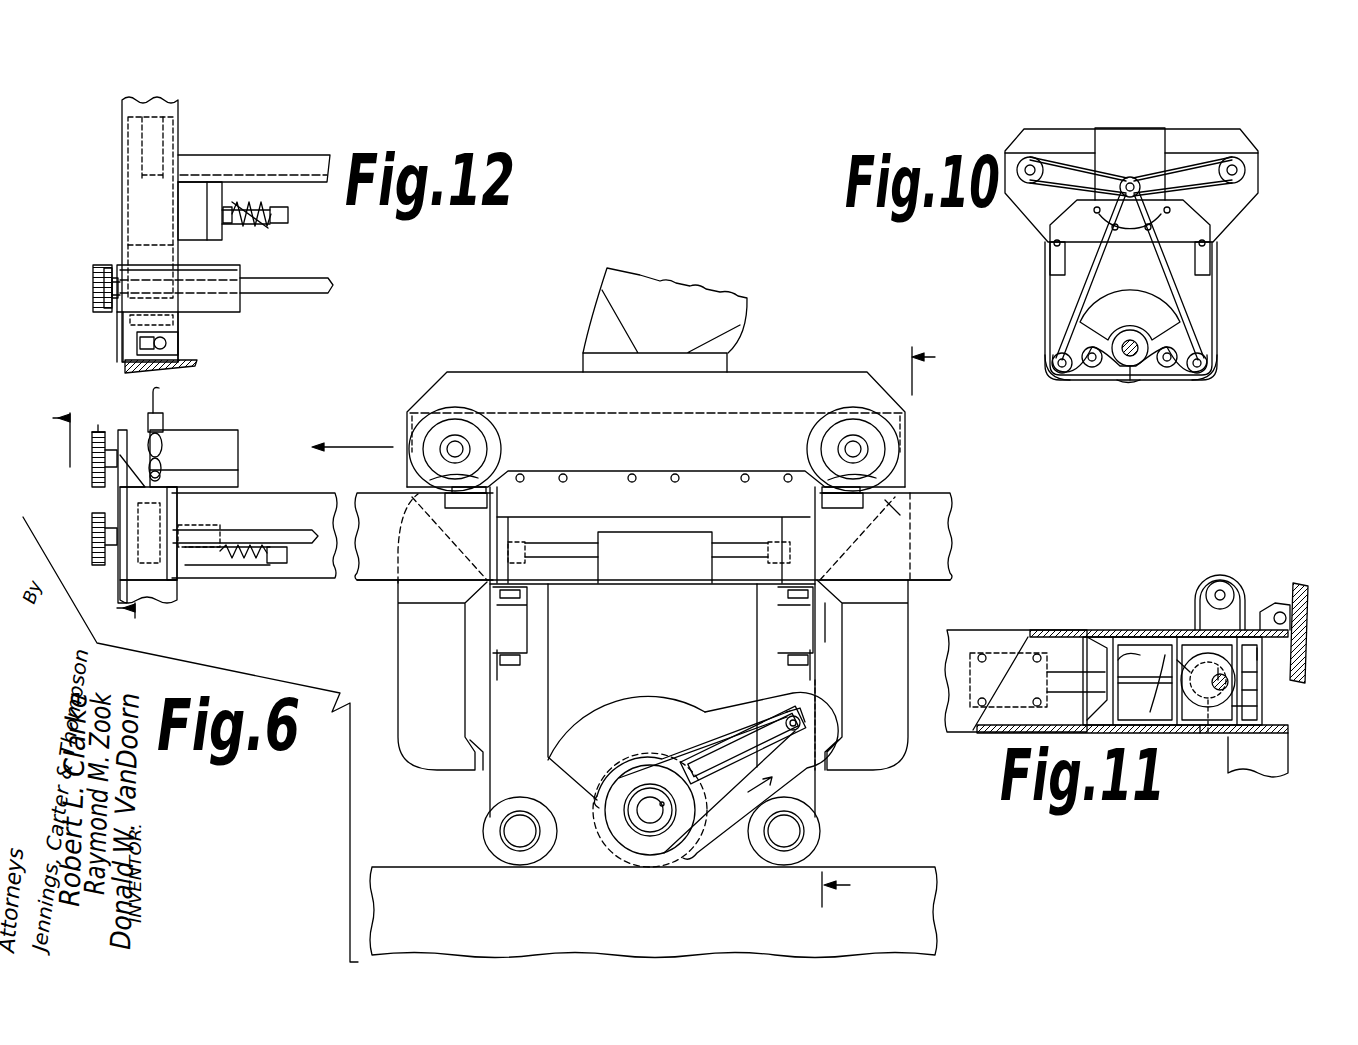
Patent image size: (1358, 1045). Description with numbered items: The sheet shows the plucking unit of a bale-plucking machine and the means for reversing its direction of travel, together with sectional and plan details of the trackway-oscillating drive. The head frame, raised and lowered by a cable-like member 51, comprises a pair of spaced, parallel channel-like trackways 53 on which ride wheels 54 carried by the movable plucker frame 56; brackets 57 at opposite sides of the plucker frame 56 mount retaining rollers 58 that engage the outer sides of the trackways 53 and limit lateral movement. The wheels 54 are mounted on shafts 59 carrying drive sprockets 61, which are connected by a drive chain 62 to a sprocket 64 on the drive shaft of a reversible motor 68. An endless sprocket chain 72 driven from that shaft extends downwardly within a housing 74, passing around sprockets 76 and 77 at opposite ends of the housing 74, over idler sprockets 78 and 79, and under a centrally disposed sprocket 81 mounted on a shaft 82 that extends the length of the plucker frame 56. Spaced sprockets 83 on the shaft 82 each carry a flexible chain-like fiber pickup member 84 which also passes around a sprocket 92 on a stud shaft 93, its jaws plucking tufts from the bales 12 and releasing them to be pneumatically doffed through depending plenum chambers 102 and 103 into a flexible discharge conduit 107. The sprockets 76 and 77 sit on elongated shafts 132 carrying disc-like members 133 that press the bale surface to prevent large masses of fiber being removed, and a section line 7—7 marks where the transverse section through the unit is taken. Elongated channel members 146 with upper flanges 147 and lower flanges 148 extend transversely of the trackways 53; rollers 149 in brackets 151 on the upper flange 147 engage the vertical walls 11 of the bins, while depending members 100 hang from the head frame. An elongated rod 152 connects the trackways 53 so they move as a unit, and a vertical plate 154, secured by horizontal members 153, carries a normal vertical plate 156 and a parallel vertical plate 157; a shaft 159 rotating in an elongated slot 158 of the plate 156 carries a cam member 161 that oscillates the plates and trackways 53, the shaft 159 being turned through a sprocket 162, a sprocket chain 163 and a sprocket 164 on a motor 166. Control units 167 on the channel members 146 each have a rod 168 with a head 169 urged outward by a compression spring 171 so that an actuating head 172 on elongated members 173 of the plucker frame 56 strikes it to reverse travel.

In FIG. 6, the section line 7— 7 is at (886, 626).
In FIG. 6, the vertical walls 11 is at (80, 514).
In FIG. 11, the vertical walls 11 is at (1300, 583).
In FIG. 6, the bales 12 is at (453, 838).
In FIG. 6, the cable-like member 51 is at (165, 395).
In FIG. 6, the trackways 53 is at (948, 480).
In FIG. 11, the trackways 53 is at (1120, 657).
In FIG. 12, the trackways 53 is at (300, 150).
In FIG. 6, the wheels 54 is at (495, 452).
In FIG. 6, the plucker frame 56 is at (820, 371).
In FIG. 6, the brackets 57 is at (445, 478).
In FIG. 6, the retaining rollers 58 is at (463, 510).
In FIG. 6, the shafts 59 is at (460, 452).
In FIG. 10, the shafts 59 is at (1043, 178).
In FIG. 10, the drive sprockets 61 is at (1030, 185).
In FIG. 10, the drive chain 62 is at (1070, 186).
In FIG. 10, the sprocket 64 is at (1148, 160).
In FIG. 10, the reversible motor 68 is at (1153, 133).
In FIG. 10, the endless sprocket chain 72 is at (1093, 280).
In FIG. 10, the housing 74 is at (1218, 310).
In FIG. 10, the sprocket 76 is at (1062, 375).
In FIG. 10, the sprocket 77 is at (1197, 374).
In FIG. 10, the idler sprocket 78 is at (1092, 368).
In FIG. 10, the idler sprocket 79 is at (1167, 368).
In FIG. 10, the centrally disposed sprocket 81 is at (1130, 368).
In FIG. 6, the shaft 82 is at (653, 823).
In FIG. 10, the shaft 82 is at (1150, 318).
In FIG. 6, the sprockets 83 is at (700, 825).
In FIG. 6, the fiber pickup member 84 is at (738, 683).
In FIG. 6, the sprocket 92 is at (777, 717).
In FIG. 6, the stud shaft 93 is at (800, 722).
In FIG. 6, the depending members 100 is at (185, 605).
In FIG. 11, the depending members 100 is at (1235, 738).
In FIG. 6, the plenum chamber 102 is at (398, 655).
In FIG. 6, the plenum chamber 103 is at (908, 615).
In FIG. 6, the flexible discharge conduit 107 is at (747, 306).
In FIG. 10, the elongated shafts 132 is at (1048, 368).
In FIG. 6, the disc-like members 133 is at (486, 828).
In FIG. 6, the elongated channel members 146 is at (118, 578).
In FIG. 12, the elongated channel members 146 is at (180, 128).
In FIG. 6, the upper flange 147 is at (238, 485).
In FIG. 11, the upper flange 147 is at (1133, 607).
In FIG. 6, the lower flange 148 is at (177, 585).
In FIG. 11, the lower flange 148 is at (1205, 733).
In FIG. 6, the rollers 149 is at (135, 455).
In FIG. 11, the rollers 149 is at (1275, 612).
In FIG. 12, the rollers 149 is at (125, 364).
In FIG. 11, the brackets 151 is at (1260, 652).
In FIG. 12, the brackets 151 is at (122, 335).
In FIG. 11, the elongated rod 152 is at (1070, 685).
In FIG. 12, the elongated rod 152 is at (148, 143).
In FIG. 11, the horizontal members 153 is at (1183, 688).
In FIG. 11, the vertical plate 154 is at (1170, 655).
In FIG. 6, the vertical plate 156 is at (190, 512).
In FIG. 11, the vertical plate 156 is at (1250, 716).
In FIG. 11, the vertical plate 157 is at (1228, 686).
In FIG. 11, the elongated slot 158 is at (1205, 730).
In FIG. 6, the shaft 159 is at (295, 532).
In FIG. 11, the shaft 159 is at (1219, 668).
In FIG. 12, the shaft 159 is at (300, 285).
In FIG. 6, the cam member 161 is at (245, 540).
In FIG. 11, the cam member 161 is at (1200, 645).
In FIG. 6, the sprocket 162 is at (92, 540).
In FIG. 6, the sprocket chain 163 is at (92, 497).
In FIG. 11, the sprocket chain 163 is at (1200, 608).
In FIG. 12, the sprocket chain 163 is at (93, 305).
In FIG. 6, the sprocket 164 is at (95, 425).
In FIG. 11, the sprocket 164 is at (1240, 570).
In FIG. 12, the sprocket 164 is at (110, 262).
In FIG. 6, the motor 166 is at (205, 430).
In FIG. 12, the motor 166 is at (222, 300).
In FIG. 12, the control unit 167 is at (200, 218).
In FIG. 12, the rod 168 is at (252, 222).
In FIG. 6, the head 169 is at (300, 555).
In FIG. 12, the head 169 is at (288, 215).
In FIG. 6, the compression spring 171 is at (250, 575).
In FIG. 12, the compression spring 171 is at (255, 210).
In FIG. 6, the actuating head 172 is at (525, 548).
In FIG. 6, the elongated members 173 is at (575, 550).